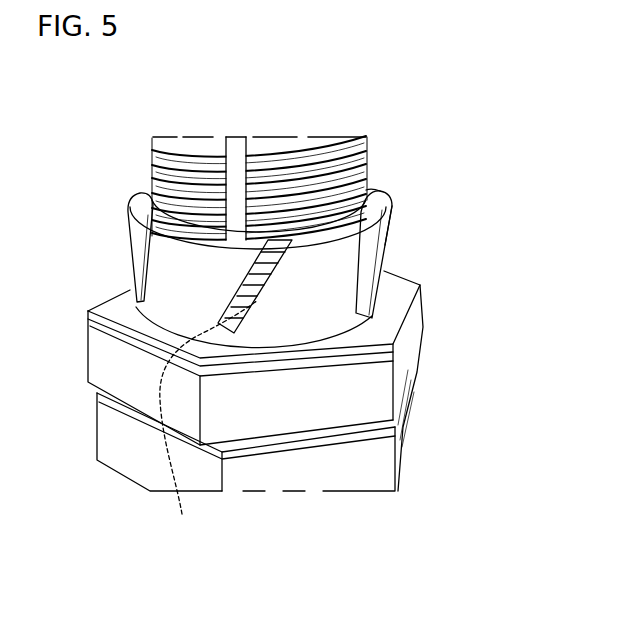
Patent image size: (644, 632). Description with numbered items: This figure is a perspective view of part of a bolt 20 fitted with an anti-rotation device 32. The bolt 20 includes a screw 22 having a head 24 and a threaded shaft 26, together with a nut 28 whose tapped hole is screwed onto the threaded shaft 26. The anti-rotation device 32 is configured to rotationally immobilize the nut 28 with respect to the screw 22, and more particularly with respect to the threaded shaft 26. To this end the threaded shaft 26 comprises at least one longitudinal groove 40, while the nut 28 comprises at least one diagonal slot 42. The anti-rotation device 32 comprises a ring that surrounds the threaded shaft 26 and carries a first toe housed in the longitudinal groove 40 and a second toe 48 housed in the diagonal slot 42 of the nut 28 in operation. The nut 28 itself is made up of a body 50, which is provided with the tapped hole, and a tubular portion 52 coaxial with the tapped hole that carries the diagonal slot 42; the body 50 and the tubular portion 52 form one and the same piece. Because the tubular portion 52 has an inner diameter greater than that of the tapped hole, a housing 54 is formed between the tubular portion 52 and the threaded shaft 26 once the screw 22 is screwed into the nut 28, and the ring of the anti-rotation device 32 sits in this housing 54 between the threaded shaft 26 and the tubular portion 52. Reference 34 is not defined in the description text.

The bolt 20 is at (442, 140).
The screw 22 is at (160, 165).
The head 24 is at (354, 462).
The threaded shaft 26 is at (362, 165).
The nut 28 is at (420, 328).
The anti-rotation device 32 is at (212, 292).
The threads 34 is at (267, 140).
The longitudinal groove 40 is at (237, 155).
The diagonal slot 42 is at (130, 252).
The second toe 48 is at (182, 514).
The body 50 is at (420, 368).
The tubular portion 52 is at (403, 220).
The housing 54 is at (385, 192).